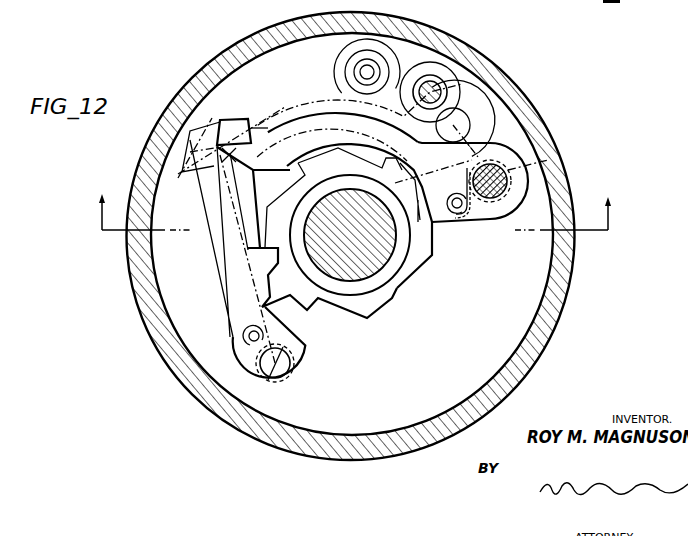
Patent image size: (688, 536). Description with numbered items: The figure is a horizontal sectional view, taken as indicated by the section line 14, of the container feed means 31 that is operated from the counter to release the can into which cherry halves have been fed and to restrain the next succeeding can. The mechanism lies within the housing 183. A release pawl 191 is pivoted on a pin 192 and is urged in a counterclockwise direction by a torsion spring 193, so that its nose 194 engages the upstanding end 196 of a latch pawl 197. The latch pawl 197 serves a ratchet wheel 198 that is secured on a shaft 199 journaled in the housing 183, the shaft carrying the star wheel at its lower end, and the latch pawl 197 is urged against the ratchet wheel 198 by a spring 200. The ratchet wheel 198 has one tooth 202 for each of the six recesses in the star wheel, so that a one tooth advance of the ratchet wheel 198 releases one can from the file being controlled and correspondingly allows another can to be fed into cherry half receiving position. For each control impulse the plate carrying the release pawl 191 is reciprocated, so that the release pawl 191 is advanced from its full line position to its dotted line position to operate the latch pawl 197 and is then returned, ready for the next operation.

The container feed means 31 is at (558, 120).
The housing 183 is at (150, 338).
The section line 14- 14 is at (359, 198).
The upstanding end 196 is at (229, 121).
The nose 194 is at (230, 155).
The latch pawl 197 is at (236, 278).
The spring 200 is at (303, 368).
The shaft 199 is at (341, 268).
The ratchet wheel 198 is at (415, 268).
The tooth 202 is at (397, 303).
The pin 192 is at (498, 200).
The torsion spring 193 is at (530, 172).
The release pawl 191 is at (497, 221).